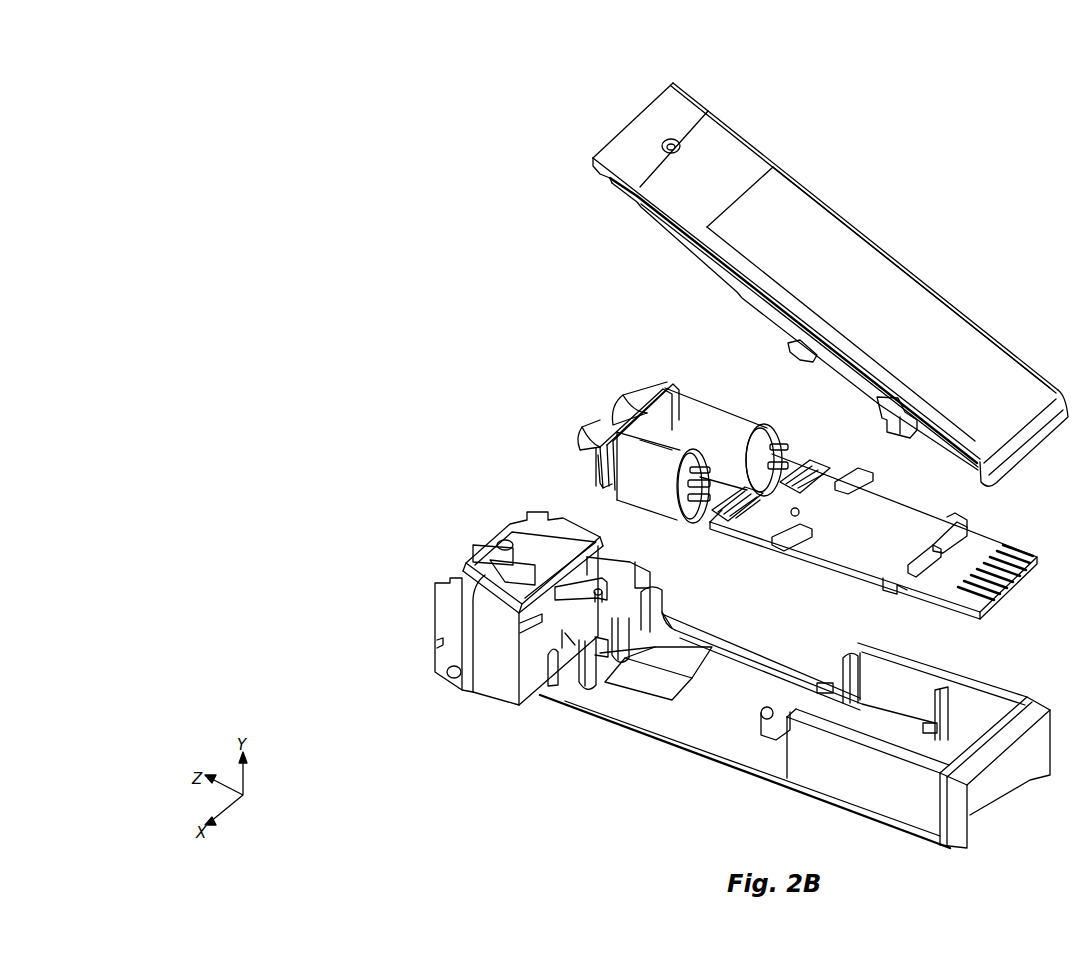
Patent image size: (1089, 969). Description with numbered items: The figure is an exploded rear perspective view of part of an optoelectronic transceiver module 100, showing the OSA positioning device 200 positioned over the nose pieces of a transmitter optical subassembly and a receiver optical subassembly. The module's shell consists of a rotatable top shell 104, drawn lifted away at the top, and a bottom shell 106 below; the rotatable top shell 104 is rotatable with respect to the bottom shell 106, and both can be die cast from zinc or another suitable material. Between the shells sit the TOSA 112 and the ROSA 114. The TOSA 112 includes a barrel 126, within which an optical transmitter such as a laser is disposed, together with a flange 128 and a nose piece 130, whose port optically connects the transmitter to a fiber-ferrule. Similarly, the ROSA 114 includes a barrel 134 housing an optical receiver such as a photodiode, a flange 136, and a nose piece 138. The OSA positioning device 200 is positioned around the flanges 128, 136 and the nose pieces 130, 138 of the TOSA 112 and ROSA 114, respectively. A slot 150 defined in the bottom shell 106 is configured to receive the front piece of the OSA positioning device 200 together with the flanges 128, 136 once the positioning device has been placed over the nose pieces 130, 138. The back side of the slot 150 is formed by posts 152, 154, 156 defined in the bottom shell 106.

The optoelectronic transceiver module 100 is at (1001, 173).
The rotatable top shell 104 is at (938, 275).
The bottom shell 106 is at (853, 783).
The transmitter optical subassembly (TOSA) 112 is at (746, 404).
The receiver optical subassembly (ROSA) 114 is at (667, 519).
The barrel 126 is at (711, 413).
The flange 128 is at (657, 393).
The nose piece 130 is at (630, 403).
The barrel 134 is at (640, 487).
The flange 136 is at (600, 483).
The nose piece 138 is at (587, 457).
The slot 150 is at (605, 622).
The post 152 is at (580, 653).
The post 154 is at (625, 621).
The post 156 is at (658, 600).
The OSA positioning device 200 is at (607, 427).